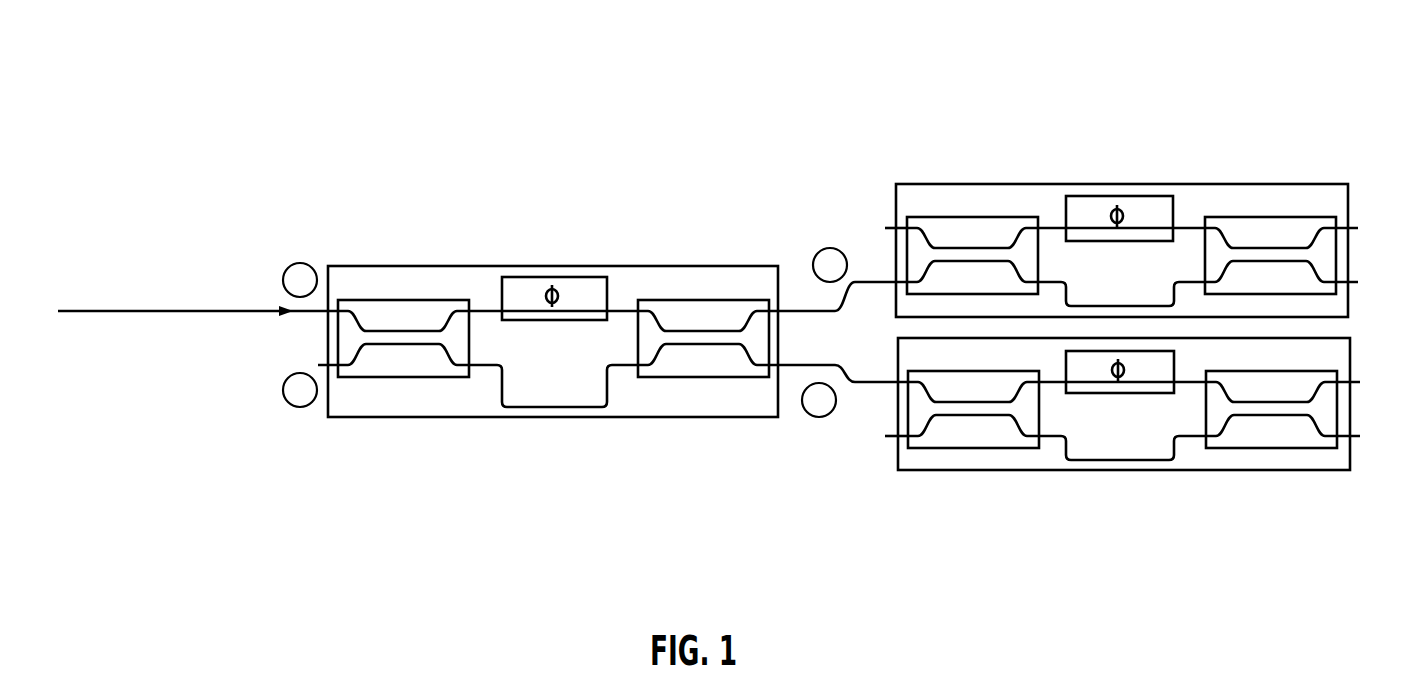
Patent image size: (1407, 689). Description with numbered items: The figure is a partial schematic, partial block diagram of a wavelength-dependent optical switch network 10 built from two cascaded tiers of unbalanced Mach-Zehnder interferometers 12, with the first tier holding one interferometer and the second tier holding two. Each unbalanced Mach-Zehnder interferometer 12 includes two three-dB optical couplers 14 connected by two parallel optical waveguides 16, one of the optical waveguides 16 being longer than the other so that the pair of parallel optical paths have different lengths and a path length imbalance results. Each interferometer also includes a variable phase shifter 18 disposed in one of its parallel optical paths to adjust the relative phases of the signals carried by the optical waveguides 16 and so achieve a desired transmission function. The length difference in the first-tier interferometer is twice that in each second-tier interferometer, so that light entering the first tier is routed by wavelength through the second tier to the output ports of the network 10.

The wavelength-dependent optical switch network 10 is at (885, 160).
The unbalanced Mach-Zehnder interferometer 12 is at (397, 264).
The 3-dB optical coupler 14 is at (392, 358).
The optical waveguide 16 is at (486, 308).
The variable phase shifter 18 is at (558, 276).